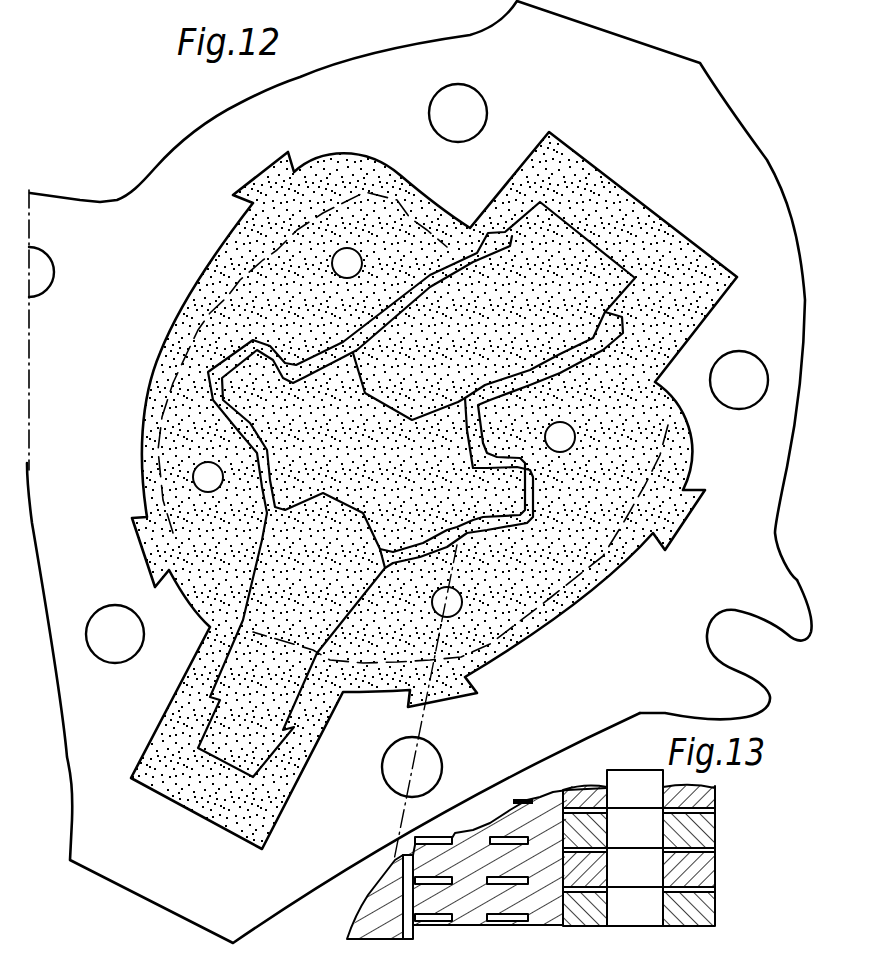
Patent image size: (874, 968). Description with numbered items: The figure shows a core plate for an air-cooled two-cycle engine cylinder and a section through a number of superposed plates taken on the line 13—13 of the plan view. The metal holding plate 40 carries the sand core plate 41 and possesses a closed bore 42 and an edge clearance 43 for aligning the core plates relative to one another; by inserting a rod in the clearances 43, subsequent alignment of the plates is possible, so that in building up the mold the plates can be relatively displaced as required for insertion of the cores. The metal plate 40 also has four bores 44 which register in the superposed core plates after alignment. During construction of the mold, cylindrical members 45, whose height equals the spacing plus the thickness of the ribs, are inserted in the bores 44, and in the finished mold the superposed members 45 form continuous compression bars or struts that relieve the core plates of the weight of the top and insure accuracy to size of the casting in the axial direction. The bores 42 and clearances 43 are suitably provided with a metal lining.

In FIG. 12, the metal holding plate 40 is at (313, 872).
In FIG. 13, the metal holding plate 40 is at (703, 907).
In FIG. 12, the sand core plate 41 is at (548, 615).
In FIG. 13, the sand core plate 41 is at (548, 907).
In FIG. 12, the closed bore 42 is at (45, 276).
In FIG. 12, the edge clearance 43 is at (733, 612).
In FIG. 12, the bores 44 is at (430, 113).
In FIG. 13, the cylindrical members 45 is at (635, 820).
In FIG. 12, the section line 13— 13 is at (415, 525).
In FIG. 13, the section line 13— 13 is at (408, 897).